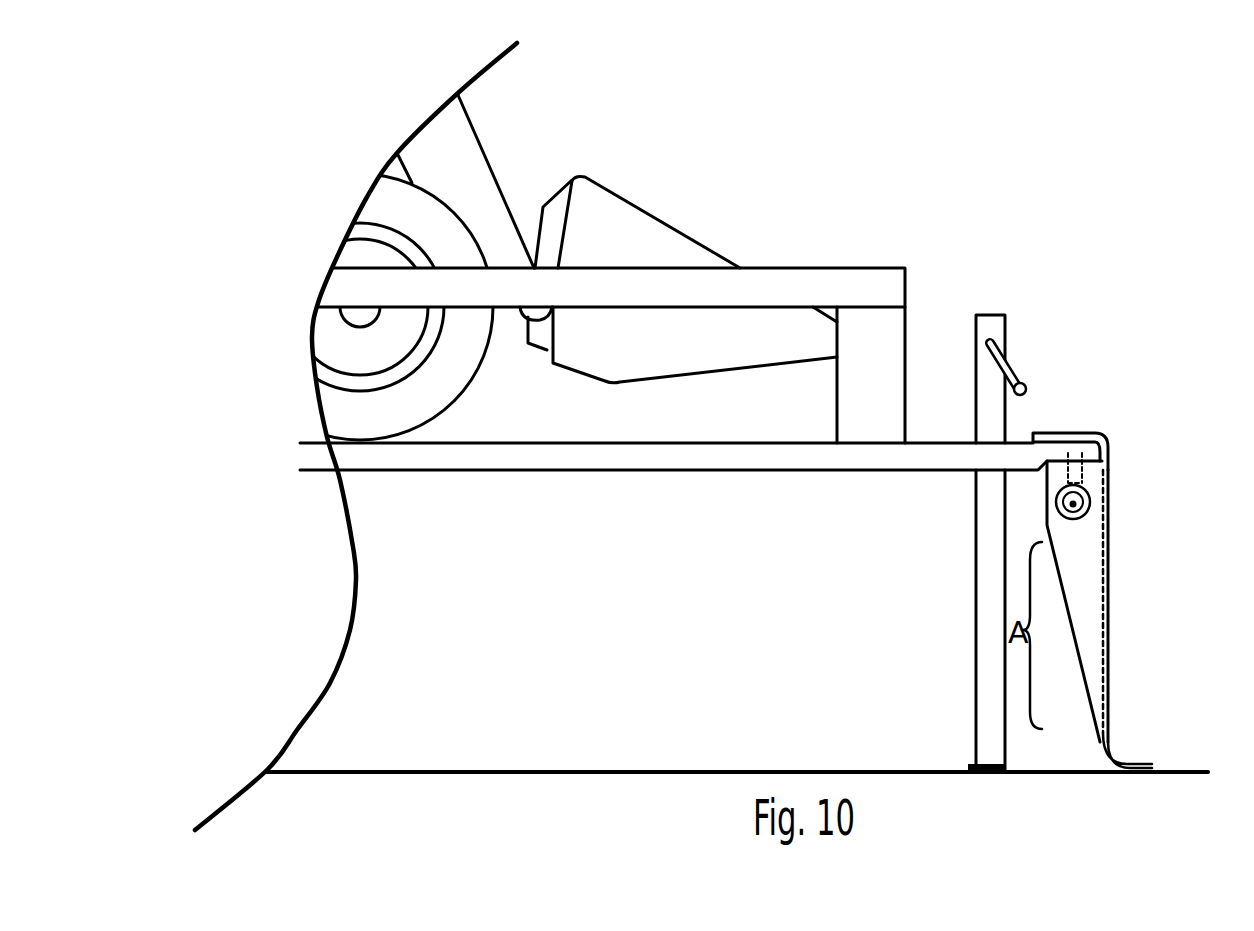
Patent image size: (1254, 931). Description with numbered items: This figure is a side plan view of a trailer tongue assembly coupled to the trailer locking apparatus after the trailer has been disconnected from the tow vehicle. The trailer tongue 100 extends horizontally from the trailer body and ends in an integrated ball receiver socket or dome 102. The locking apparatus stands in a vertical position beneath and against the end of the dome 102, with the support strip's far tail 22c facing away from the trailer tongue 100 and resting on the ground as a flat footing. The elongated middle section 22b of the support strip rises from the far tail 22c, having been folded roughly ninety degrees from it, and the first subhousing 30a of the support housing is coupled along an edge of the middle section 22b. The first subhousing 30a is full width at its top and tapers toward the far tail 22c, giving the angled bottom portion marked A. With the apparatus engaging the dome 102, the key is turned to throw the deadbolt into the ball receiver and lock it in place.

The trailer tongue 100 is at (747, 470).
The locking socket or dome 102 is at (1098, 436).
The first subhousing 30a is at (1097, 549).
The middle section 22b is at (1125, 577).
The far tail 22c is at (1131, 779).